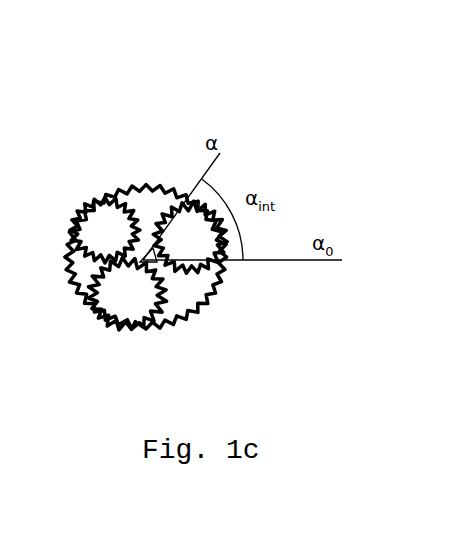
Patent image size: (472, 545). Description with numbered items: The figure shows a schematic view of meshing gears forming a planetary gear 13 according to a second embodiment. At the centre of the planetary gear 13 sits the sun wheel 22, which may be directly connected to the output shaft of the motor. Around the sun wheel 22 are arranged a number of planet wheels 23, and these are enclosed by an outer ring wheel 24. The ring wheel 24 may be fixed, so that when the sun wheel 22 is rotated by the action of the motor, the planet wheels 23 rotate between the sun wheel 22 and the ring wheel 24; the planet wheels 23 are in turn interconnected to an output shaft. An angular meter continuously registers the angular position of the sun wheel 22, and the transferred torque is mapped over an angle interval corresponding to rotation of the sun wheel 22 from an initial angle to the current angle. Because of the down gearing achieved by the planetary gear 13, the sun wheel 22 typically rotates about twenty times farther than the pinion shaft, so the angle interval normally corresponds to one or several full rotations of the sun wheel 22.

The planetary gear 13 is at (138, 261).
The sun wheel 22 is at (155, 268).
The planet wheels 23 is at (165, 302).
The ring wheel 24 is at (126, 191).